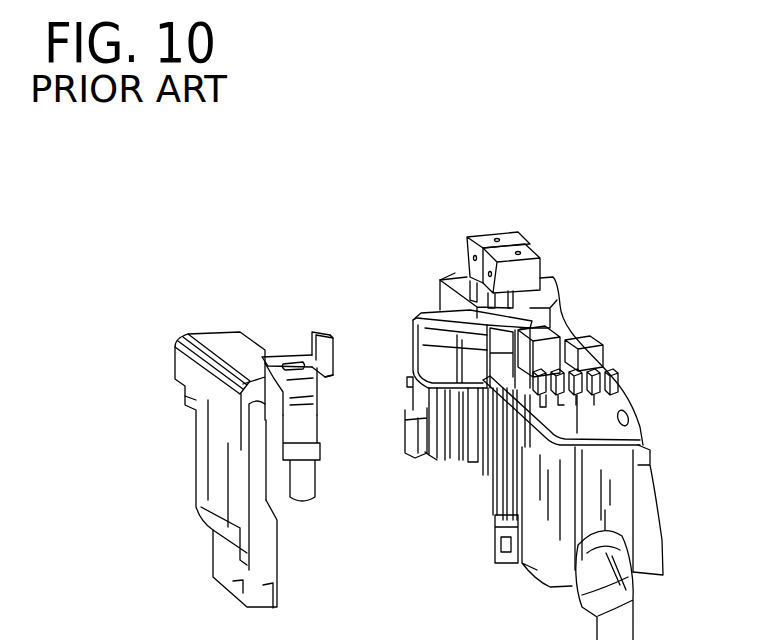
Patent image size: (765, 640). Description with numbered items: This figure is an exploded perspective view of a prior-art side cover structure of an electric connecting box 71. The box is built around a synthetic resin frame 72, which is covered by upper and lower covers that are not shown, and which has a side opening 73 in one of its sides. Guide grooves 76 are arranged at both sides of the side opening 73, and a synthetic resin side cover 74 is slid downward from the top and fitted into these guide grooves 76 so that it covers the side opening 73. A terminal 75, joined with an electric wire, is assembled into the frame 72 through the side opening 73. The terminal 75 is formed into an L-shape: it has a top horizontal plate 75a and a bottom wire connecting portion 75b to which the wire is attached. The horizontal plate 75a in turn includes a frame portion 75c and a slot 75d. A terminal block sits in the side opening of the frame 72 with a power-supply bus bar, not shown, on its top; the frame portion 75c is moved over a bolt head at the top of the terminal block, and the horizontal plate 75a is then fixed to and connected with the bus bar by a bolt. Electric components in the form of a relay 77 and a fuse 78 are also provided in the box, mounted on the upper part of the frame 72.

The electric connecting box 71 is at (276, 168).
The frame 72 is at (550, 525).
The side opening 73 is at (467, 420).
The side cover 74 is at (187, 476).
The terminal 75 is at (295, 352).
The horizontal plate 75a is at (266, 355).
The wire connecting portion 75b is at (310, 430).
The frame portion 75c is at (313, 332).
The slot 75d is at (333, 350).
The guide grooves 76 is at (468, 435).
The relay 77 is at (500, 232).
The fuse 78 is at (593, 377).